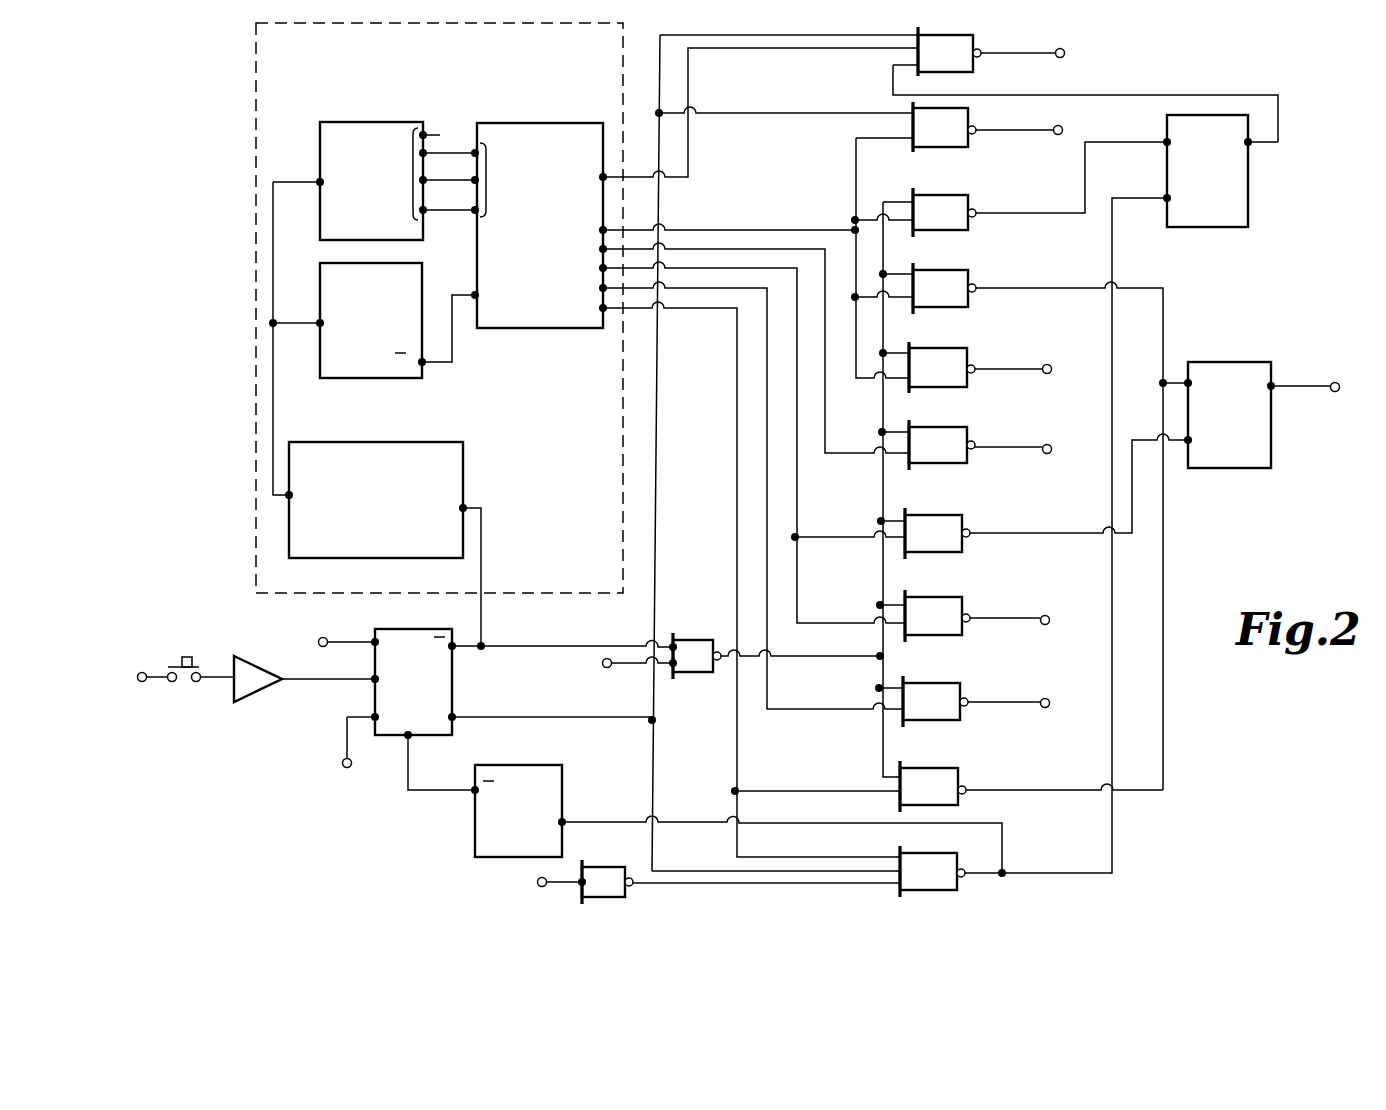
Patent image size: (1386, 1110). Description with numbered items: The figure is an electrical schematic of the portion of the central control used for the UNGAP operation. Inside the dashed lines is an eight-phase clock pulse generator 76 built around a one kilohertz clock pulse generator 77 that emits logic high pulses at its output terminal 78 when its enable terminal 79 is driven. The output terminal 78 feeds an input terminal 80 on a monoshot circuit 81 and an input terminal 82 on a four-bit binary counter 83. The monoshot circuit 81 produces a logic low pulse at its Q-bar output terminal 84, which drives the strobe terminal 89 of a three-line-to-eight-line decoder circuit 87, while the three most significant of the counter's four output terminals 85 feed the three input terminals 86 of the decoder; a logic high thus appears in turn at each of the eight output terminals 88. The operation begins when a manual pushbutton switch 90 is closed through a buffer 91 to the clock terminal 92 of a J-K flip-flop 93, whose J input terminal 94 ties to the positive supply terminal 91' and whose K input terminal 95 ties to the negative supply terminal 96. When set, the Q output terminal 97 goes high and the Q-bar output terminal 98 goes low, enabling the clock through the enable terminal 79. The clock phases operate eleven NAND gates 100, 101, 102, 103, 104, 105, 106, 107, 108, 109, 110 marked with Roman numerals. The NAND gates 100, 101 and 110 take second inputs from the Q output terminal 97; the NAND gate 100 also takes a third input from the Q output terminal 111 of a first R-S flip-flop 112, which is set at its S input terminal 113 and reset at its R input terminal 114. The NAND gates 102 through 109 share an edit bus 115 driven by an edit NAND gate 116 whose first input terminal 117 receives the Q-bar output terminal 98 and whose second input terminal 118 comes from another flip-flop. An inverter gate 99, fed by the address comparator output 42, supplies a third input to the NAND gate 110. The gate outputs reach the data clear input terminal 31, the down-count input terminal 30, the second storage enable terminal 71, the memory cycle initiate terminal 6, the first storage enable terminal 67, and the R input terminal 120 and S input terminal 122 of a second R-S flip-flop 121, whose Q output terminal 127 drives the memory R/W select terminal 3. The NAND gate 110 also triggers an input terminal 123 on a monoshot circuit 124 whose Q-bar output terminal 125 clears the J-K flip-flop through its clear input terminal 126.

The memory R/W select terminal 3 is at (1336, 384).
The memory cycle initiate terminal 6 is at (1050, 445).
The down-count input terminal 30 is at (1061, 128).
The data clear input terminal 31 is at (1063, 50).
The address comparator output 42 is at (537, 882).
The first storage enable terminal 67 is at (1048, 615).
The second storage enable terminal 71 is at (1049, 364).
The eight-phase clock pulse generator 76 is at (254, 90).
The clock pulse generator 77 is at (466, 444).
The output terminal 78 is at (287, 497).
The enable terminal 79 is at (468, 507).
The input terminal 80 is at (313, 322).
The monoshot circuit 81 is at (330, 262).
The input terminal 82 is at (318, 180).
The four-bit binary counter 83 is at (380, 118).
The Q-bar output terminal 84 is at (428, 364).
The output terminals 85 is at (410, 160).
The input terminals 86 is at (492, 170).
The decoder circuit 87 is at (565, 190).
The output terminals 88 is at (598, 250).
The strobe terminal 89 is at (470, 293).
The manual pushbutton switch 90 is at (188, 657).
The buffer 91 is at (287, 692).
The positive supply terminal 91' is at (325, 633).
The clock terminal 92 is at (374, 678).
The J-K flip-flop 93 is at (436, 688).
The J input terminal 94 is at (373, 640).
The K input terminal 95 is at (372, 715).
The negative supply terminal 96 is at (342, 770).
The Q output terminal 97 is at (456, 716).
The Q-bar output terminal 98 is at (456, 650).
The inverter gate 99 is at (597, 866).
The NAND gate 100 is at (966, 38).
The NAND gate 101 is at (960, 118).
The NAND gate 102 is at (955, 195).
The NAND gate 103 is at (955, 272).
The NAND gate 104 is at (953, 350).
The NAND gate 105 is at (955, 428).
The NAND gate 106 is at (948, 516).
The NAND gate 107 is at (945, 598).
The NAND gate 108 is at (947, 686).
The NAND gate 109 is at (942, 768).
The NAND gate 110 is at (937, 854).
The Q output terminal 111 is at (1250, 146).
The first R-S flip-flop 112 is at (1215, 183).
The S input terminal 113 is at (1164, 203).
The R input terminal 114 is at (1164, 140).
The edit bus 115 is at (878, 750).
The edit NAND gate 116 is at (686, 648).
The first input terminal 117 is at (670, 645).
The second input terminal 118 is at (672, 667).
The R input terminal 120 is at (1186, 380).
The second R-S flip-flop 121 is at (1245, 430).
The S input terminal 122 is at (1187, 446).
The input terminal 123 is at (566, 820).
The monoshot circuit 124 is at (546, 764).
The Q-bar output terminal 125 is at (473, 789).
The clear input terminal 126 is at (405, 740).
The Q output terminal 127 is at (1273, 382).